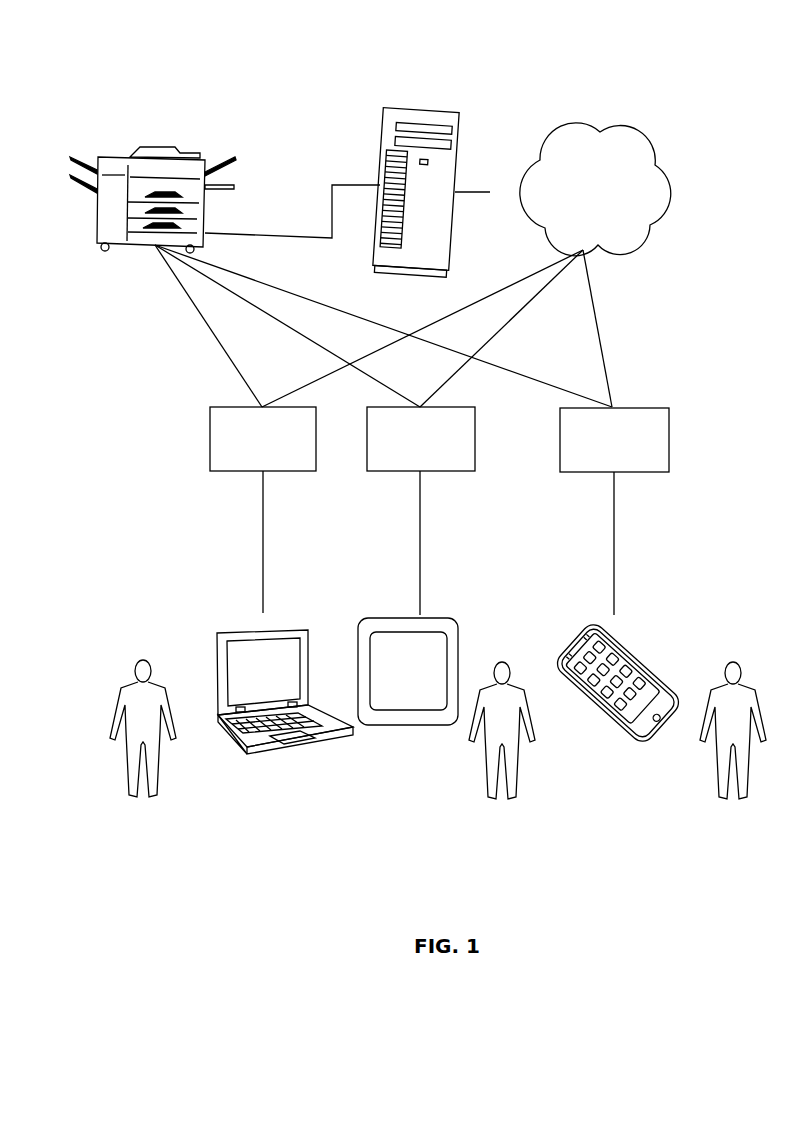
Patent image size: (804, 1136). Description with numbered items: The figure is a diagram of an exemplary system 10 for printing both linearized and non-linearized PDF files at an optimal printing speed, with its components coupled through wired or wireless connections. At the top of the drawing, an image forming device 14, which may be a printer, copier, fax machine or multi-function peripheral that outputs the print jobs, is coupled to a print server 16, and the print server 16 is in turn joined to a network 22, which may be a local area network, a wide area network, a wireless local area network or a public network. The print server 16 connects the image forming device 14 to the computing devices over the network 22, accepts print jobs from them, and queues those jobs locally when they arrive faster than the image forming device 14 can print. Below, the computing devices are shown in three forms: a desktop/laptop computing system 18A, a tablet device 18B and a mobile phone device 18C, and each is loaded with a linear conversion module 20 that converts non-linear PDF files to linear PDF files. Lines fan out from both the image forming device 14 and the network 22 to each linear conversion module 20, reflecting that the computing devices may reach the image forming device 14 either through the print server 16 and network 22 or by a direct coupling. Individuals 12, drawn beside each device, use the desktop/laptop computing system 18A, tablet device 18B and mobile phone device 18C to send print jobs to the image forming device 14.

The system 10 is at (270, 25).
The individuals 12 is at (148, 796).
The image forming device 14 is at (95, 220).
The print server 16 is at (418, 108).
The desktop/laptop computing system 18A is at (278, 631).
The tablet device 18B is at (432, 617).
The mobile phone device 18C is at (640, 648).
The linear conversion module 20 is at (210, 438).
The network 22 is at (668, 158).